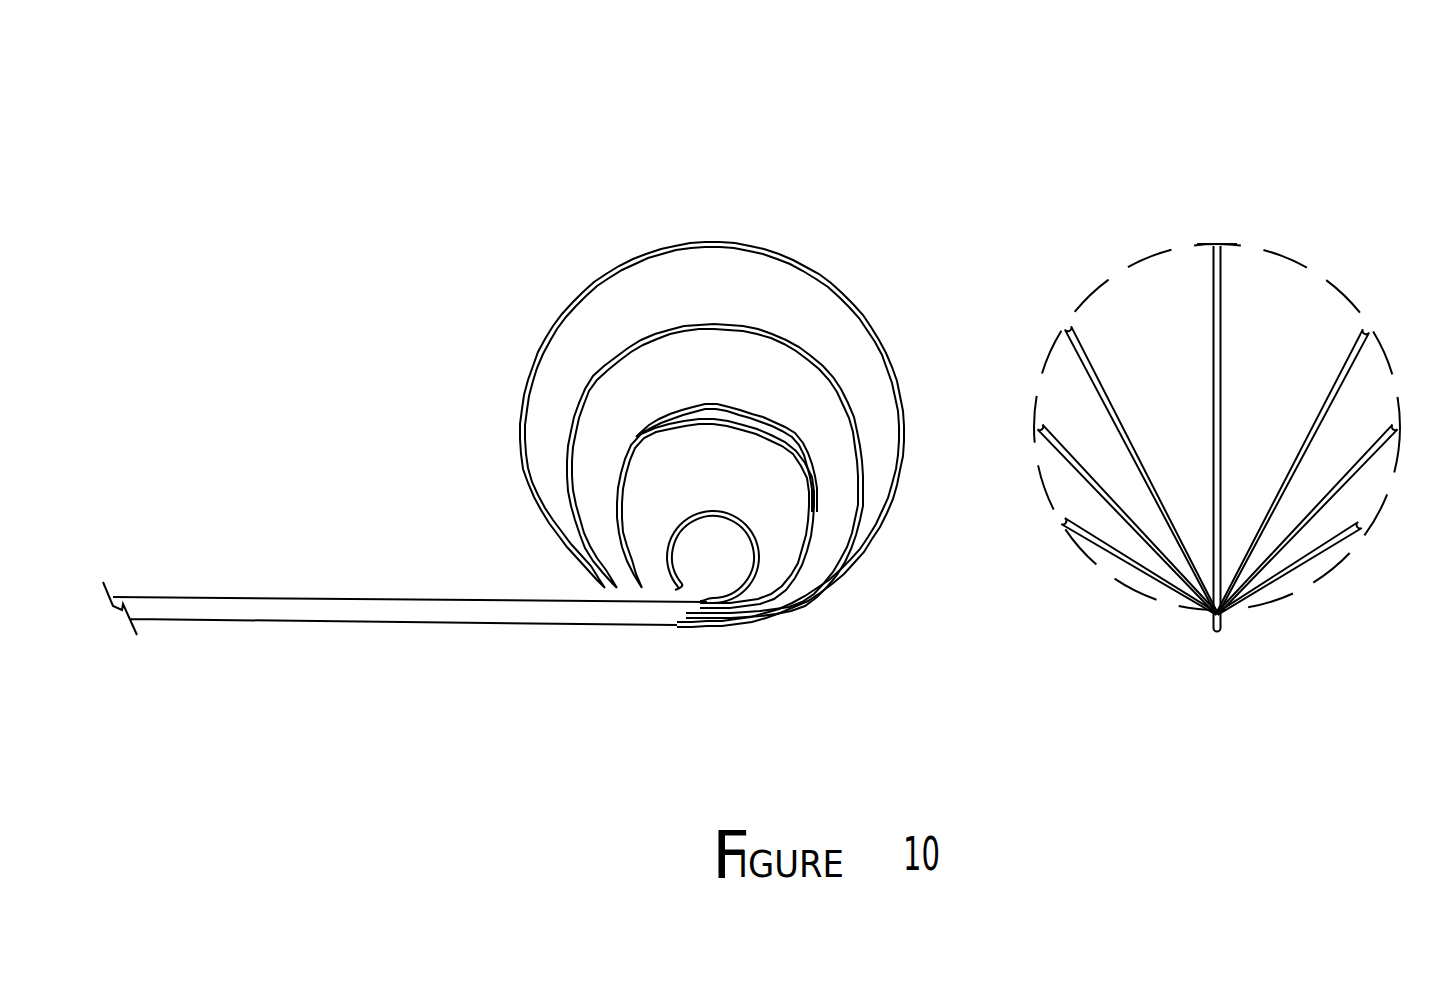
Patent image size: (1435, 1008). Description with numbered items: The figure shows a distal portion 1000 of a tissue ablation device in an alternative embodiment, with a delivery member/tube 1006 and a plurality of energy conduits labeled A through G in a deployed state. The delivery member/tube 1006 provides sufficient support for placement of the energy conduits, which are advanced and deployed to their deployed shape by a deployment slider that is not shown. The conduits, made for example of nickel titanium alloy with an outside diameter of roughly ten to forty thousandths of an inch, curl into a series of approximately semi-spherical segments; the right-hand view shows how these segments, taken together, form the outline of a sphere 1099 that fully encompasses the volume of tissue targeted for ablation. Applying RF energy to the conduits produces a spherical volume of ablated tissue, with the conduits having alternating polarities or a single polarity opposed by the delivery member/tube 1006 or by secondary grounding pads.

The distal portion 1000 is at (878, 125).
The delivery member/tube 1006 is at (303, 585).
The sphere 1099 is at (1293, 236).